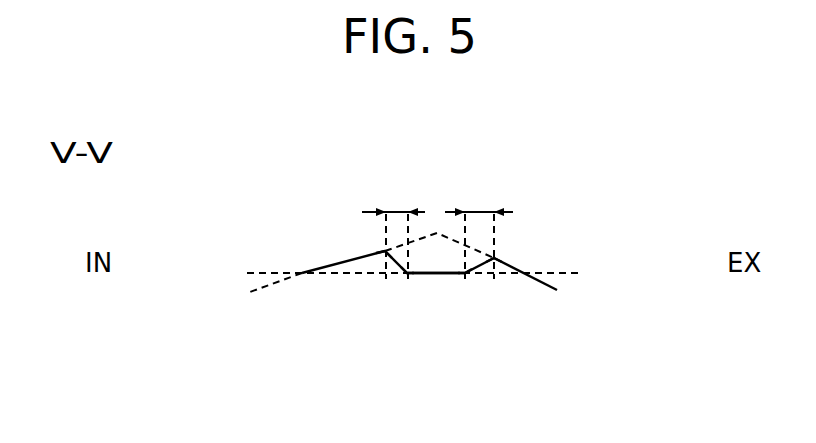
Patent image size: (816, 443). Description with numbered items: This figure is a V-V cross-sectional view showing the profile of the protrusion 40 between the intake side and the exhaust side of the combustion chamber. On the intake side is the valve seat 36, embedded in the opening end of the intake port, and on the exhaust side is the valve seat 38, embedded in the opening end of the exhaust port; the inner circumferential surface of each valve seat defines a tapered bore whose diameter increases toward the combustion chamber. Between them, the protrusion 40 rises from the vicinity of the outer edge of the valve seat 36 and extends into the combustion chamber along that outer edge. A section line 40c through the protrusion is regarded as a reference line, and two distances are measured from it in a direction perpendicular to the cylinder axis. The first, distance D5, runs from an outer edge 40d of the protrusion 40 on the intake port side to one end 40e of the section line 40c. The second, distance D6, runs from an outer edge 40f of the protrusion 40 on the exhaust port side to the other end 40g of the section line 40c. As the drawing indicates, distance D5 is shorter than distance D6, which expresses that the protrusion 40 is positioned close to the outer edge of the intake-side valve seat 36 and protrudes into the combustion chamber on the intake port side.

The valve seat 36 is at (343, 264).
The valve seat 38 is at (522, 273).
The protrusion 40 is at (435, 273).
The section line 40c is at (423, 273).
The outer edge 40d is at (385, 251).
The one end 40e is at (408, 273).
The outer edge 40f is at (497, 253).
The other end 40g is at (467, 273).
The distance D5 is at (395, 212).
The distance D6 is at (478, 212).